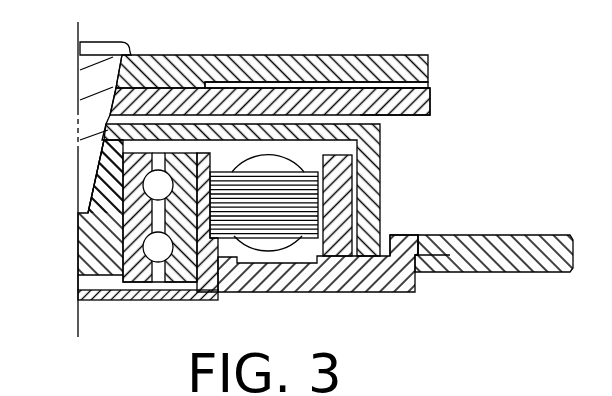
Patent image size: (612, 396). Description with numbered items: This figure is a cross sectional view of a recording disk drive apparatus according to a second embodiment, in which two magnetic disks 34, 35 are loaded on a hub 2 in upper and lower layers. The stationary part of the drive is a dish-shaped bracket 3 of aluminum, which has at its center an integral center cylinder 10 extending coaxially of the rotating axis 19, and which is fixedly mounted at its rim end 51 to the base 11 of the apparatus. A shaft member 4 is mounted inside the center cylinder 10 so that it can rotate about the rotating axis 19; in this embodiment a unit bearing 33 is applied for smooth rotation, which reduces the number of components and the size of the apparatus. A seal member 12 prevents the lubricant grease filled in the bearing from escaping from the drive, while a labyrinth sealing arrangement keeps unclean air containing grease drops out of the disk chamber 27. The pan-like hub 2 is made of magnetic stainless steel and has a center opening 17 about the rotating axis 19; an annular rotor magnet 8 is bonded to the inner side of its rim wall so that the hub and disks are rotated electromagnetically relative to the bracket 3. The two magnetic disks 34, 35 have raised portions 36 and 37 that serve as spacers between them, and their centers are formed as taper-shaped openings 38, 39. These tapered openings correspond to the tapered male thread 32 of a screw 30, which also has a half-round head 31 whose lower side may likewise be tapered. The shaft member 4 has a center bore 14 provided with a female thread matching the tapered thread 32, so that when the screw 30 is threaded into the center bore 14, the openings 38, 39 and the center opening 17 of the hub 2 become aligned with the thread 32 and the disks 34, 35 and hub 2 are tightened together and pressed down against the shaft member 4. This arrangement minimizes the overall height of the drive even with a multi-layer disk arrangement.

The hub 2 is at (360, 142).
The bracket 3 is at (310, 292).
The shaft member 4 is at (86, 240).
The rotor magnet 8 is at (340, 200).
The center cylinder 10 is at (199, 228).
The base 11 is at (515, 273).
The seal member 12 is at (160, 302).
The center bore 14 is at (89, 172).
The center opening 17 is at (109, 152).
The rotating axis 19 is at (77, 307).
The disk chamber 27 is at (513, 115).
The screw 30 is at (97, 40).
The half-round head 31 is at (130, 52).
The thread 32 is at (89, 125).
The unit bearing 33 is at (128, 275).
The magnetic disk 34 is at (333, 56).
The magnetic disk 35 is at (373, 97).
The raised portion 36 is at (211, 82).
The raised portion 37 is at (233, 97).
The taper-shaped opening 38 is at (106, 56).
The taper-shaped opening 39 is at (110, 100).
The rim end 51 is at (421, 235).